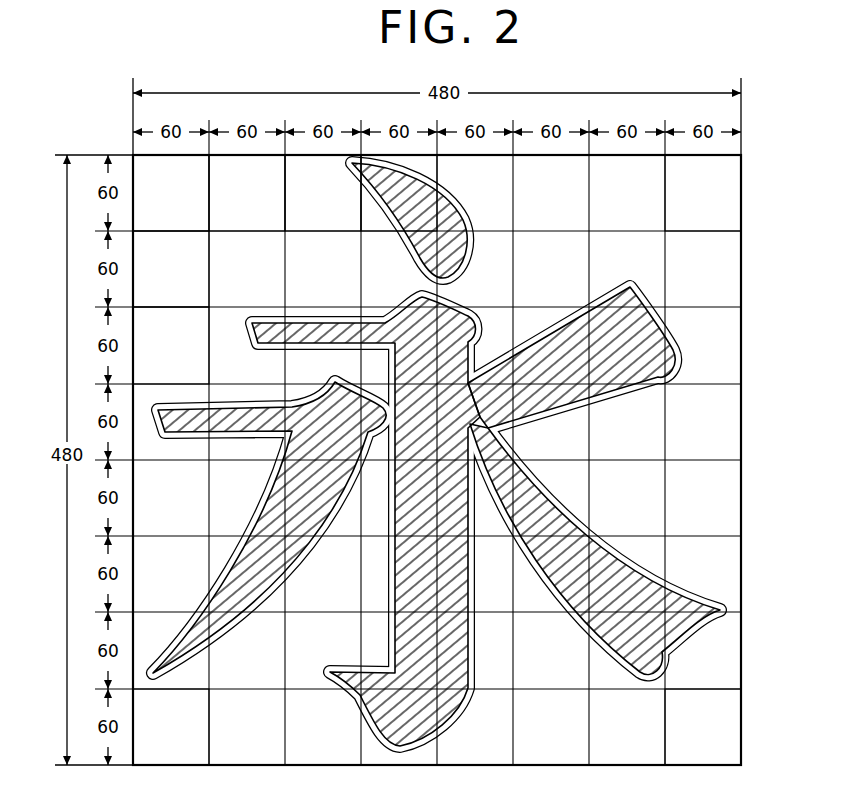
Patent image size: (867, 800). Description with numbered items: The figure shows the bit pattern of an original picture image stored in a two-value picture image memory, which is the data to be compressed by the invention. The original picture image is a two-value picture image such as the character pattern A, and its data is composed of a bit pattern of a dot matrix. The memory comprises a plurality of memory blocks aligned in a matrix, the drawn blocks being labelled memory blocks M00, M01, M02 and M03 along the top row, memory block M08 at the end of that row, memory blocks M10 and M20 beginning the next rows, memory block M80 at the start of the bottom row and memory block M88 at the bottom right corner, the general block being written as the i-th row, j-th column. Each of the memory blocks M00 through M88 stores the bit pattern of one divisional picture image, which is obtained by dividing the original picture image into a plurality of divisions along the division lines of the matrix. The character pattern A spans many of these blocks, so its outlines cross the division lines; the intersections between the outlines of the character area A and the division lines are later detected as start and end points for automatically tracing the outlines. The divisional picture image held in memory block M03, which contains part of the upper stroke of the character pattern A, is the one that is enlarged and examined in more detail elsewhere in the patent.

The character pattern A is at (463, 322).
The memory block M00 is at (171, 193).
The memory block M01 is at (247, 193).
The memory block M02 is at (323, 193).
The memory block M03 is at (399, 193).
The memory block M08 is at (703, 193).
The memory block M10 is at (171, 269).
The memory block M20 is at (171, 345).
The memory block M80 is at (171, 727).
The memory block M88 is at (703, 727).